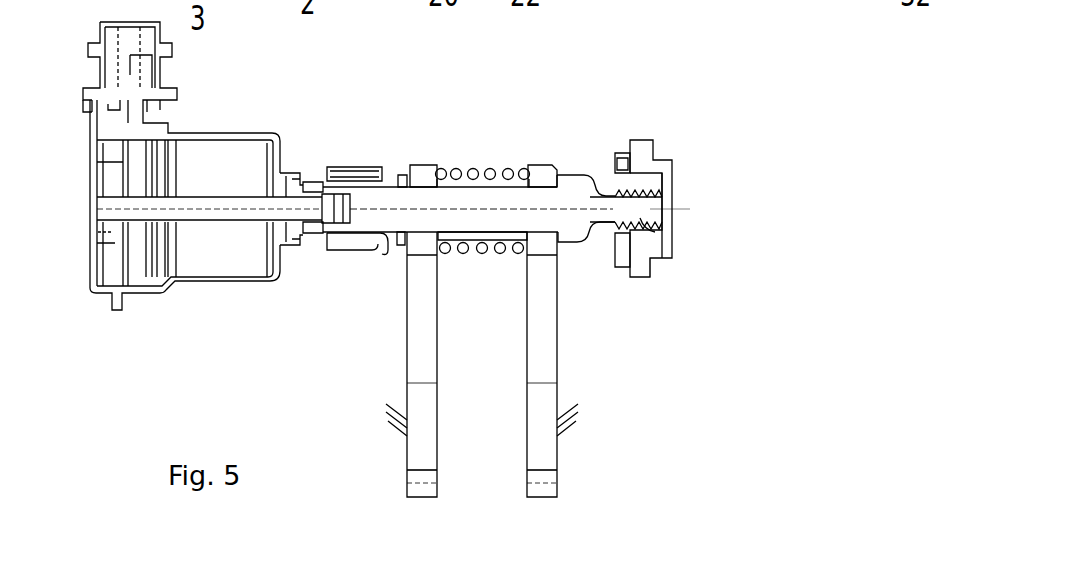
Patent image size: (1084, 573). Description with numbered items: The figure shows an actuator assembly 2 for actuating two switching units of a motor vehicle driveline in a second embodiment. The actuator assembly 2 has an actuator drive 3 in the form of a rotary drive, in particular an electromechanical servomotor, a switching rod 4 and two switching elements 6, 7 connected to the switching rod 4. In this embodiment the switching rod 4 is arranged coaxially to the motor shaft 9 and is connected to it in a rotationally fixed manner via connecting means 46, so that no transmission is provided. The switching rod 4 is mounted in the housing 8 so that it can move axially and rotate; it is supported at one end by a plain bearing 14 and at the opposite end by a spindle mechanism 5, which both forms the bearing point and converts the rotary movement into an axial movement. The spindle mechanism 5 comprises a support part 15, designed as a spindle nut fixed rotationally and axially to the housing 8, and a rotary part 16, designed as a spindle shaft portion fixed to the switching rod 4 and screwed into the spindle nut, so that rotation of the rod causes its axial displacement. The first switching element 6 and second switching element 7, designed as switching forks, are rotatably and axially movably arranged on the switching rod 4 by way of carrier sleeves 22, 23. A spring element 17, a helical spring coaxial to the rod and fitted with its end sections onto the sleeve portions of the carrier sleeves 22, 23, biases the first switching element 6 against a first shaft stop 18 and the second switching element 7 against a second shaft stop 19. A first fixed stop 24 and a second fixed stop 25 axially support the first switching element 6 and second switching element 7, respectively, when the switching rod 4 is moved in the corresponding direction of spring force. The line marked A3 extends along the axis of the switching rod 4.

The actuator assembly 2 is at (296, 334).
The actuator drive 3 is at (203, 47).
The switching rod 4 is at (490, 230).
The spindle mechanism 5 is at (664, 282).
The first switching element 6 is at (557, 362).
The second switching element 7 is at (427, 366).
The housing 8 is at (658, 162).
The motor shaft 9 is at (238, 200).
The plain bearing 14 is at (354, 240).
The support part 15 is at (637, 180).
The rotary part 16 is at (662, 235).
The spring element 17 is at (490, 170).
The first shaft stop 18 is at (555, 177).
The second shaft stop 19 is at (400, 178).
The carrier sleeve 22 is at (546, 168).
The carrier sleeve 23 is at (420, 172).
The first fixed stop 24 is at (557, 448).
The second fixed stop 25 is at (407, 450).
The connecting means 46 is at (318, 186).
The axes A3, A4 A3 is at (650, 208).